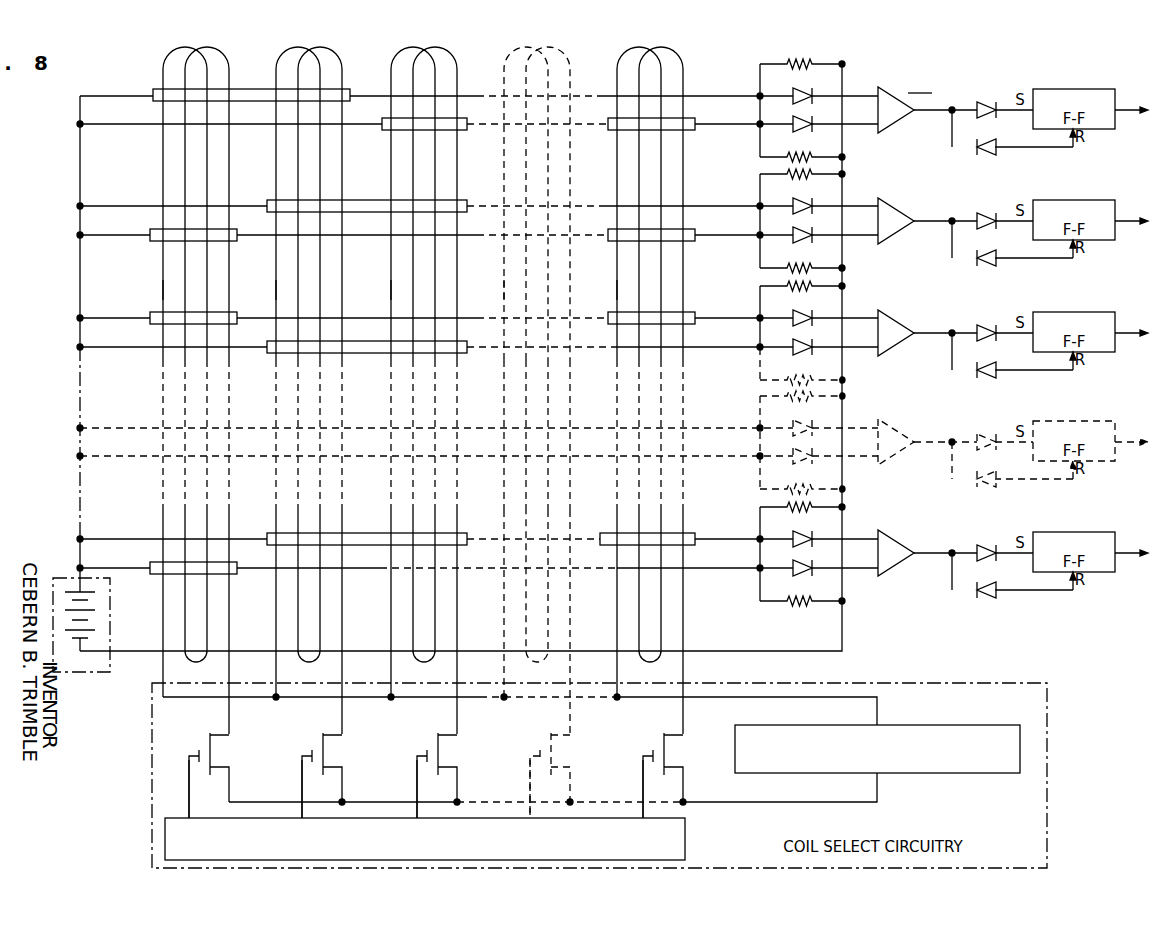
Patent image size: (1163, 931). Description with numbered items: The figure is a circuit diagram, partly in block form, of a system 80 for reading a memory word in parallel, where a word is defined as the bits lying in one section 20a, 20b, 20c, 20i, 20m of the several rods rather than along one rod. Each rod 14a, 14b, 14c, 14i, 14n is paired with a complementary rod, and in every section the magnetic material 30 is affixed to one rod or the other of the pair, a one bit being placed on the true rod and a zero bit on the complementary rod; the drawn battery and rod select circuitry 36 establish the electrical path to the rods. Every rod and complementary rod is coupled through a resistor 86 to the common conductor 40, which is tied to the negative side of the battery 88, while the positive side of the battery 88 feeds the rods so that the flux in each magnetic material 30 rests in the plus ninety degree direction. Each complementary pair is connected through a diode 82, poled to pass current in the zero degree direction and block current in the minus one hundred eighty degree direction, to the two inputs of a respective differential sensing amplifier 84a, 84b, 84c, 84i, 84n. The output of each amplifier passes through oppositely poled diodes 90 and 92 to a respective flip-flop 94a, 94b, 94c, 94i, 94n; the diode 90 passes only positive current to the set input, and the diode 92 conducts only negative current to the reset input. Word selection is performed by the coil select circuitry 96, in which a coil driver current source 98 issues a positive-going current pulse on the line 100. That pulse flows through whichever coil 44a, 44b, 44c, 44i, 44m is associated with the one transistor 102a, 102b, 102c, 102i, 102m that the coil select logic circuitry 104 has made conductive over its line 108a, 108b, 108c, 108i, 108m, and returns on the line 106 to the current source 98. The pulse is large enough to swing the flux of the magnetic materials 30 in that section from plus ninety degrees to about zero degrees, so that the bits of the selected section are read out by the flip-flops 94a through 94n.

The rod 14a is at (727, 92).
The rod 14b is at (727, 203).
The rod 14c is at (727, 315).
The rod 14i is at (718, 425).
The rod 14n is at (727, 536).
The section 20a is at (176, 46).
The section 20b is at (289, 46).
The section 20c is at (404, 46).
The section 20i is at (515, 46).
The section 20m is at (628, 46).
The magnetic material 30 is at (154, 101).
The rod select circuitry 36 is at (111, 618).
The common conductor 40 is at (742, 652).
The coil 44a is at (162, 285).
The coil 44b is at (276, 290).
The coil 44c is at (391, 290).
The coil 44i is at (504, 292).
The coil 44m is at (617, 290).
The system 80 is at (919, 82).
The diode 82 is at (795, 119).
The sensing amplifier 84a is at (898, 123).
The sensing amplifier 84b is at (898, 234).
The sensing amplifier 84c is at (896, 346).
The sensing amplifier 84i is at (896, 455).
The sensing amplifier 84n is at (896, 566).
The resistor 86 is at (797, 60).
The battery 88 is at (62, 612).
The diode 90 is at (985, 101).
The diode 92 is at (985, 155).
The flip-flop 94a is at (1100, 88).
The flip-flop 94b is at (1103, 187).
The flip-flop 94c is at (1103, 302).
The flip-flop 94i is at (1101, 412).
The flip-flop 94n is at (1103, 520).
The coil select circuitry 96 is at (1048, 736).
The coil driver current source 98 is at (977, 774).
The line 100 is at (814, 699).
The transistor 102a is at (224, 749).
The transistor 102b is at (337, 749).
The transistor 102c is at (452, 749).
The transistor 102i is at (565, 749).
The transistor 102m is at (678, 749).
The coil select logic circuitry 104 is at (686, 833).
The line 106 is at (796, 804).
The line 108a is at (188, 762).
The line 108b is at (302, 790).
The line 108c is at (417, 790).
The line 108i is at (530, 790).
The line 108m is at (643, 790).